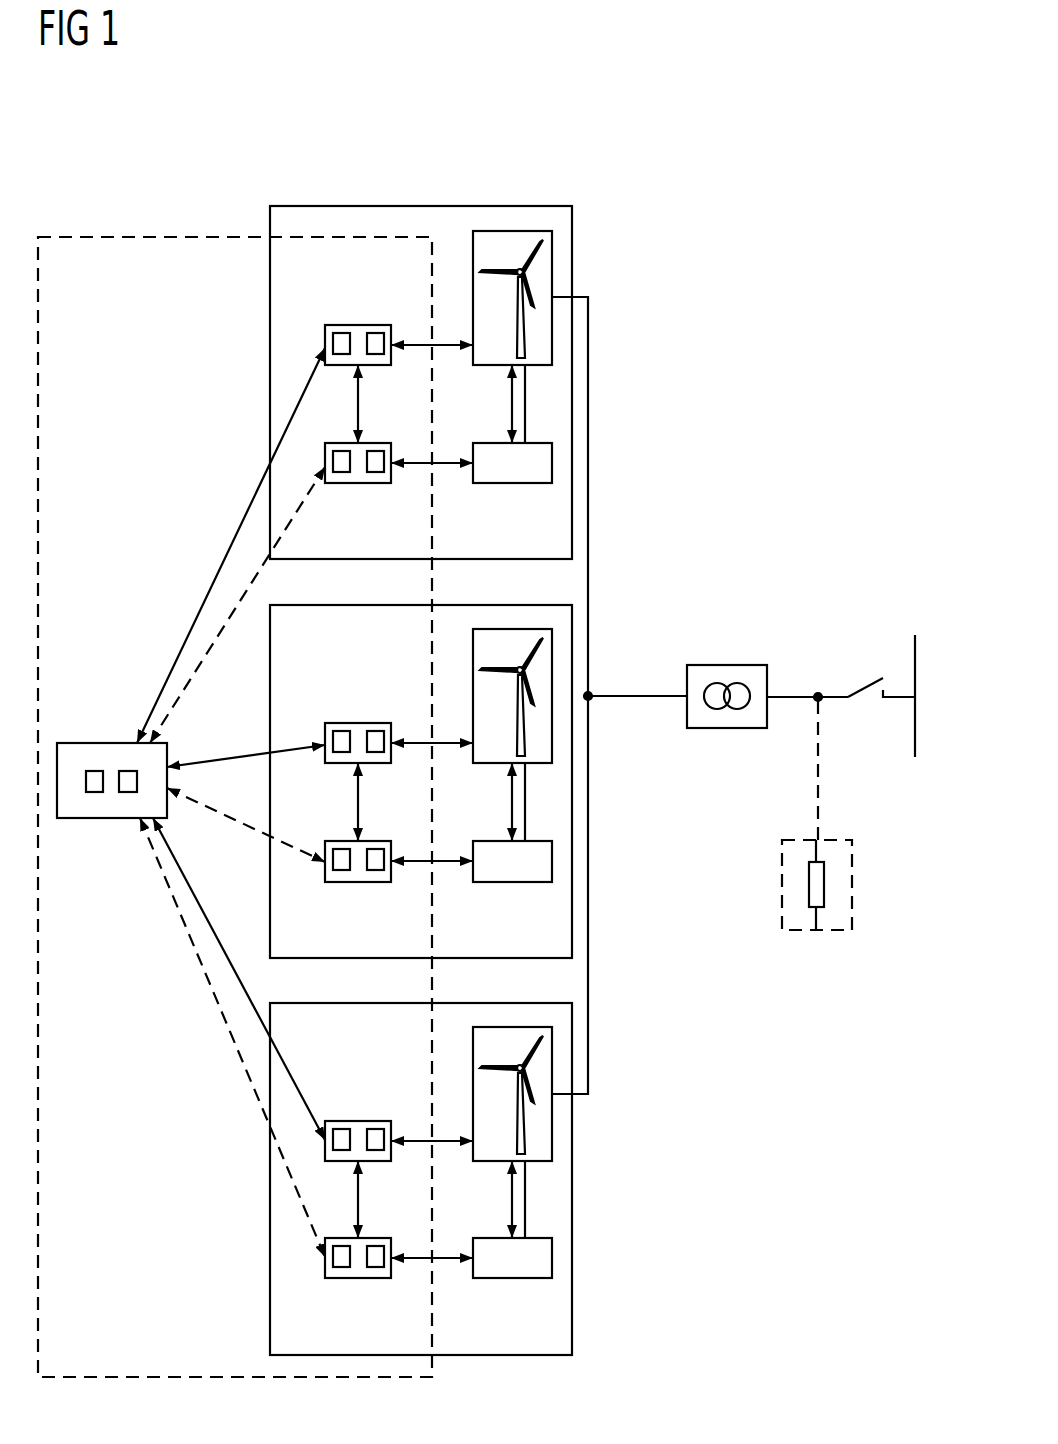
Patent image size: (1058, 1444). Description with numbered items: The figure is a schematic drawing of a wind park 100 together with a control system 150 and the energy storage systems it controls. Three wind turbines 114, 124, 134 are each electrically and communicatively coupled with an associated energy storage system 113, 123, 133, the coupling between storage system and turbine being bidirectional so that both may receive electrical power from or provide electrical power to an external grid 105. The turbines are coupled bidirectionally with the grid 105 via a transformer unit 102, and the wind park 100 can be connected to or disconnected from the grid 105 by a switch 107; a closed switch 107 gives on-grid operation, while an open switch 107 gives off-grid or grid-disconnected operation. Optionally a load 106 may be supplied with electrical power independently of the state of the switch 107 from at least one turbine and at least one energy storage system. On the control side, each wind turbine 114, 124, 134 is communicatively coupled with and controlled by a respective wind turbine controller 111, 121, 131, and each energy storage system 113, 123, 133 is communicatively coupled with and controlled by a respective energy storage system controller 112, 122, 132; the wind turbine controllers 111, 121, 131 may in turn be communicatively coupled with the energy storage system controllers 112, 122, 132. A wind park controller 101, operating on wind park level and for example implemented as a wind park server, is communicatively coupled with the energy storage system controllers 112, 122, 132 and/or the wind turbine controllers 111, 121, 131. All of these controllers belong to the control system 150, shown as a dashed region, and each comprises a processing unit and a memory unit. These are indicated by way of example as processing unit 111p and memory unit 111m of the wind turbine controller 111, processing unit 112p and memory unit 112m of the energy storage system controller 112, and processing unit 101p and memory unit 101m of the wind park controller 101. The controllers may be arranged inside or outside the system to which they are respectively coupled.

The wind park 100 is at (332, 150).
The control system 150 is at (200, 216).
The wind park controller 101 is at (107, 795).
The processing unit 101p is at (93, 793).
The memory unit 101m is at (128, 793).
The wind turbine controller 111 is at (350, 346).
The processing unit 111p is at (340, 333).
The memory unit 111m is at (372, 333).
The energy storage system controller 112 is at (362, 464).
The processing unit 112p is at (341, 483).
The memory unit 112m is at (375, 483).
The energy storage system 113 is at (512, 485).
The wind turbine 114 is at (497, 367).
The wind turbine controller 121 is at (358, 722).
The energy storage system controller 122 is at (358, 883).
The energy storage system 123 is at (512, 883).
The wind turbine 124 is at (493, 765).
The wind turbine controller 131 is at (358, 1120).
The energy storage system controller 132 is at (358, 1279).
The energy storage system 133 is at (512, 1279).
The wind turbine 134 is at (493, 1163).
The transformer unit 102 is at (727, 664).
The external grid 105 is at (914, 736).
The load 106 is at (818, 931).
The switch 107 is at (866, 682).